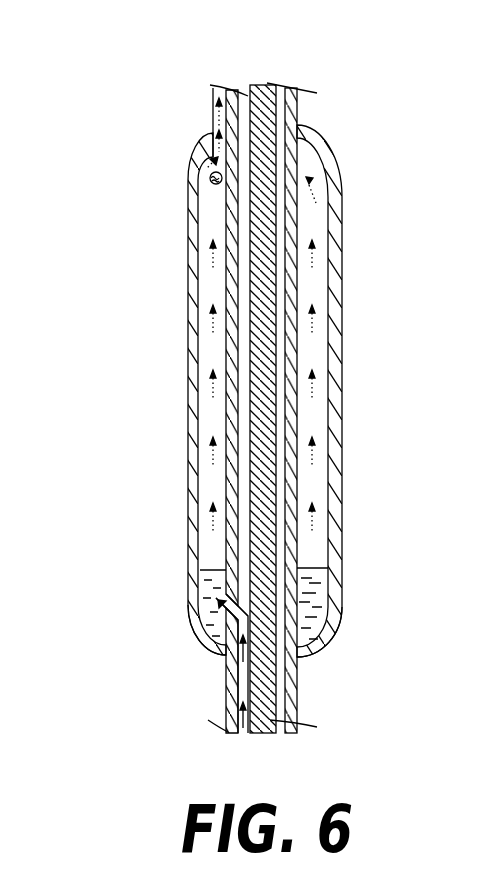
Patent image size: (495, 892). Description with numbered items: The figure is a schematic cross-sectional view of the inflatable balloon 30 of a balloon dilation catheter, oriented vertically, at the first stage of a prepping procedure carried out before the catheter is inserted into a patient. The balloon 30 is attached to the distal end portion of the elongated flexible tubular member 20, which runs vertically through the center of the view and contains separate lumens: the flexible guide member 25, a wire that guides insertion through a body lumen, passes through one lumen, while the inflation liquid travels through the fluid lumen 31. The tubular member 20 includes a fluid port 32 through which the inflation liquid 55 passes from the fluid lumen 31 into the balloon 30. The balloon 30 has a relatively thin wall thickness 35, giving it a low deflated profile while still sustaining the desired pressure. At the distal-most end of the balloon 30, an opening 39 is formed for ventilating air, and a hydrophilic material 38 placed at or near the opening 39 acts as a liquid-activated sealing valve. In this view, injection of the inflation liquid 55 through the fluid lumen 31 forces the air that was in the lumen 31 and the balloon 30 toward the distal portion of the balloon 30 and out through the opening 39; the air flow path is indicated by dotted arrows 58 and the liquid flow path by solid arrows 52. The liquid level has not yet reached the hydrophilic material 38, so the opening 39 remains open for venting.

The inflatable balloon 30 is at (255, 398).
The elongated flexible tubular member 20 is at (230, 485).
The flexible guide member 25 is at (248, 420).
The fluid lumen 31 is at (237, 685).
The fluid port 32 is at (237, 627).
The wall thickness 35 is at (341, 305).
The hydrophilic material 38 is at (210, 179).
The opening 39 is at (213, 123).
The solid arrows 52 is at (190, 612).
The inflation liquid 55 is at (332, 628).
The dotted arrows 58 is at (212, 253).